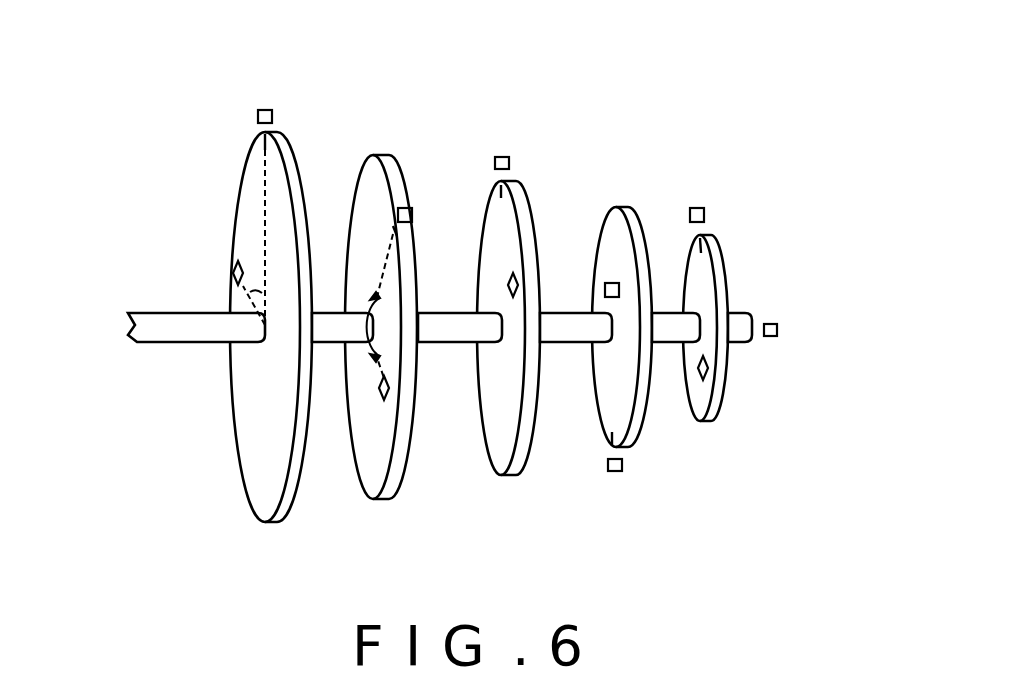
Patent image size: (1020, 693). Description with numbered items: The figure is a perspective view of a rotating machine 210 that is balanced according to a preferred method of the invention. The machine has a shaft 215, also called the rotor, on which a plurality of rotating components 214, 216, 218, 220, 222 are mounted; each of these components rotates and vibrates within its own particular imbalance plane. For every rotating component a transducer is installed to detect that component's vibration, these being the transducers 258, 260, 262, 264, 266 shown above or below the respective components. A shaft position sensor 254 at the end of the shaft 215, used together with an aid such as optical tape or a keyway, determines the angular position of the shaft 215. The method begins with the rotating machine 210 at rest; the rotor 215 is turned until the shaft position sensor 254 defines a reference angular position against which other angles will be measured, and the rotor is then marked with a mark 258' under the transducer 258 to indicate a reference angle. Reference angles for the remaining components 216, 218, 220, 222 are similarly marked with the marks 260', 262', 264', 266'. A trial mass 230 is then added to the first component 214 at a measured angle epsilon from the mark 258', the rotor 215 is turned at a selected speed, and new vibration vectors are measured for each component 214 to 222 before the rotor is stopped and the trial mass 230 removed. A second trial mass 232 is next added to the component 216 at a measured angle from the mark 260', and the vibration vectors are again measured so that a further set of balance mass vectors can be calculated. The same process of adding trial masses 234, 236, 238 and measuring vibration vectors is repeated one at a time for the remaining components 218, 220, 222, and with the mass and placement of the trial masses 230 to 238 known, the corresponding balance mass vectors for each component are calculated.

The rotating machine 210 is at (517, 66).
The rotating component 214 is at (266, 523).
The shaft 215 is at (182, 343).
The rotating component 216 is at (375, 500).
The rotating component 218 is at (500, 475).
The rotating component 220 is at (632, 437).
The rotating component 222 is at (718, 418).
The trial mass 230 is at (232, 281).
The second trial mass 232 is at (388, 392).
The trial mass 234 is at (517, 278).
The trial mass 236 is at (613, 283).
The trial mass 238 is at (708, 372).
The shaft position sensor 254 is at (778, 330).
The transducer 258 is at (294, 90).
The mark 258' is at (221, 123).
The transducer 260 is at (428, 171).
The mark 260' is at (364, 171).
The transducer 262 is at (536, 148).
The mark 262' is at (495, 147).
The transducer 264 is at (642, 486).
The mark 264' is at (583, 473).
The transducer 266 is at (736, 186).
The mark 266' is at (766, 234).